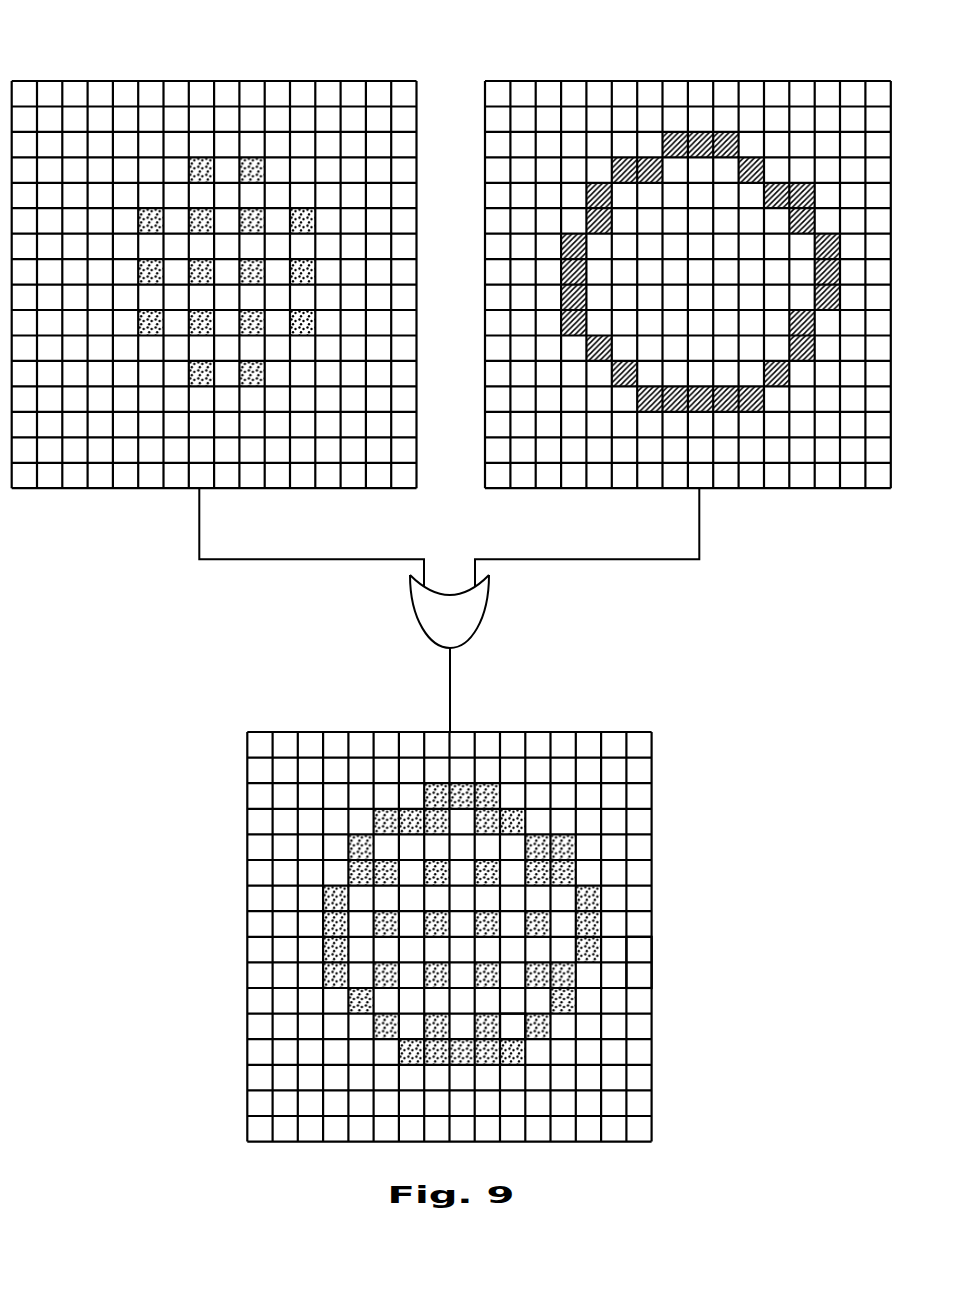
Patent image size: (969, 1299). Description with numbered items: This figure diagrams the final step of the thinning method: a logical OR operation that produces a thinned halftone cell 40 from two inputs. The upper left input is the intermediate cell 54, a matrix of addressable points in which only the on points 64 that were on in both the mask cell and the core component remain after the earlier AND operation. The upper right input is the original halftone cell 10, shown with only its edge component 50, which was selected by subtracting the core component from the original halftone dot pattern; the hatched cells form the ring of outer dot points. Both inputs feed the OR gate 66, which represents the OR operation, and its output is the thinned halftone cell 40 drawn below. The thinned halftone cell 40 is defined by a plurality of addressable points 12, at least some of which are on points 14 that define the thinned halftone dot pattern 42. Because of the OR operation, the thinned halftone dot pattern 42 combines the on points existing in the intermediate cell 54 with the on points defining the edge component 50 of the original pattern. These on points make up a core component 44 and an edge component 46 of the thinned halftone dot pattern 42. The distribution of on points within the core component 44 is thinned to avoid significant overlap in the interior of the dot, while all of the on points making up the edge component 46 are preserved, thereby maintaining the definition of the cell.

The intermediate cell 54 is at (77, 78).
The on points 64 is at (257, 168).
The original halftone cell 10 is at (832, 78).
The edge component 50 is at (610, 182).
The OR gate 66 is at (468, 612).
The thinned halftone cell 40 is at (238, 786).
The on points 14 is at (432, 786).
The thinned halftone dot pattern 42 is at (608, 895).
The addressable points 12 is at (642, 975).
The edge component 46 is at (575, 1001).
The core component 44 is at (512, 1027).